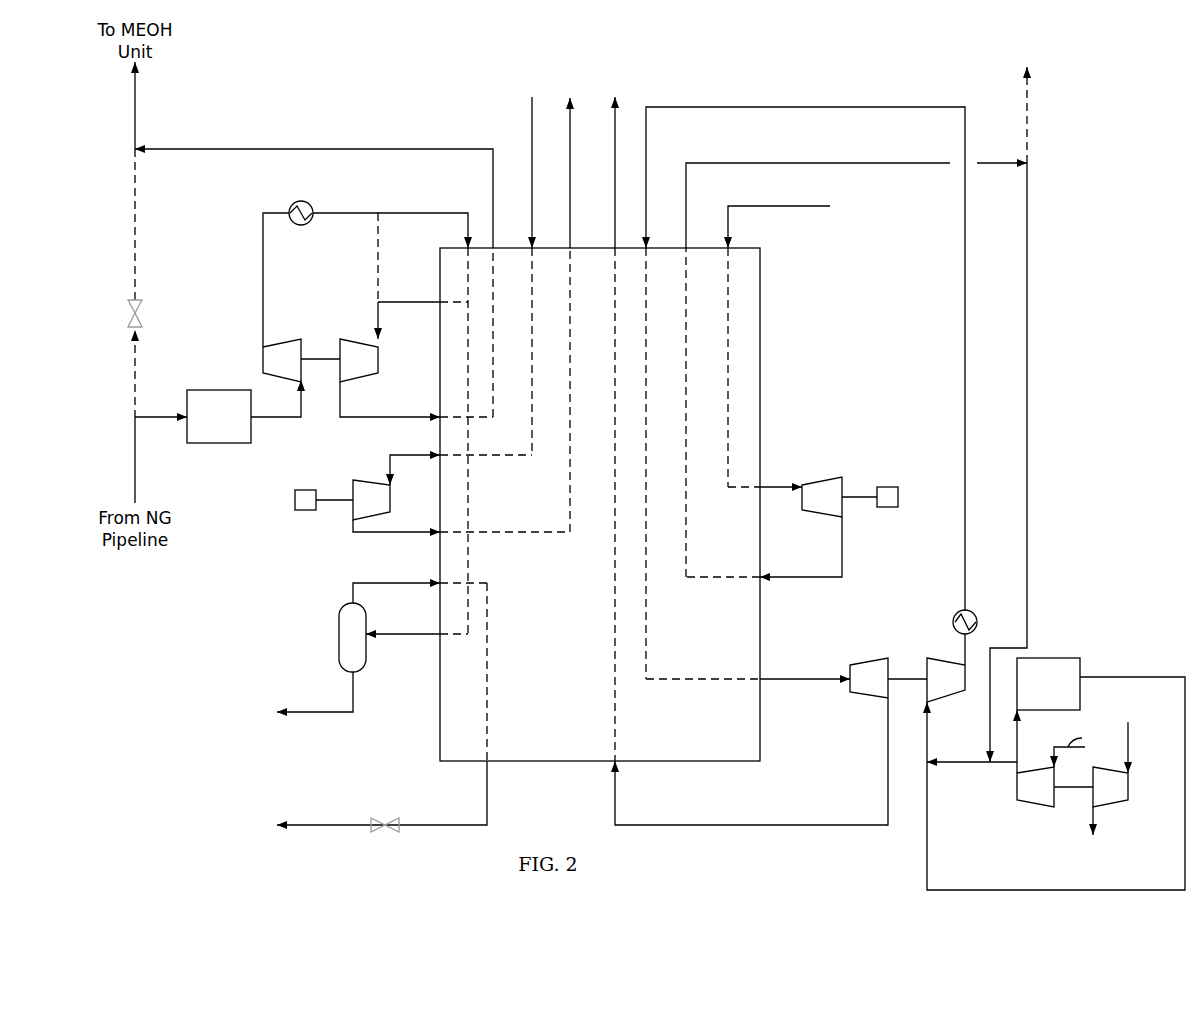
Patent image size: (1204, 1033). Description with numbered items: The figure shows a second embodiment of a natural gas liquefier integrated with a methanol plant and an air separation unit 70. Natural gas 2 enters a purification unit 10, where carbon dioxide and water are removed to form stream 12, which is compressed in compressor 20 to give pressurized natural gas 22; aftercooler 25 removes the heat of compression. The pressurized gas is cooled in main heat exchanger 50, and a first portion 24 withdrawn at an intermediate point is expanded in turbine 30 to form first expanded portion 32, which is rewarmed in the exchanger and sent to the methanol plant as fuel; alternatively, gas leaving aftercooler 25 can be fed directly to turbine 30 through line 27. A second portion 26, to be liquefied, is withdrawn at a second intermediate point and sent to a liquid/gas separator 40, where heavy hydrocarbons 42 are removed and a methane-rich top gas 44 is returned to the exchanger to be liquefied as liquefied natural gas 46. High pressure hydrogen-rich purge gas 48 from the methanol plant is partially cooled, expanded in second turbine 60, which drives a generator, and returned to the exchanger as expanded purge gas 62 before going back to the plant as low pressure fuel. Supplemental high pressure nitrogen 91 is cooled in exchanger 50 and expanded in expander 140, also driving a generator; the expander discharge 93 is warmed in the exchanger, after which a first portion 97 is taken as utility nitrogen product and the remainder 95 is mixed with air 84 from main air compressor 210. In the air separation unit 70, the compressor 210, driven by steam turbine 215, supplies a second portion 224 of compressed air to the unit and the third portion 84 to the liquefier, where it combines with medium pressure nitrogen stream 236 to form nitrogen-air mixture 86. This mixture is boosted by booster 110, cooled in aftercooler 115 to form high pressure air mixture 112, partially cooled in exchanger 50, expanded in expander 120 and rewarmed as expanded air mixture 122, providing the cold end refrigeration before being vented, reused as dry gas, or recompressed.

The natural gas 2 is at (150, 417).
The pretreatment unit 10 is at (219, 416).
The stream 12 is at (291, 418).
The compressor 20 is at (301, 360).
The pressurized natural gas 22 is at (255, 253).
The first portion of the pressurized natural gas 24 is at (433, 300).
The aftercooler 25 is at (309, 203).
The second portion of the pressurized natural gas 26 is at (396, 633).
The line 27 is at (378, 253).
The turbine 30 is at (359, 360).
The first expanded portion 32 is at (398, 416).
The separator 40 is at (352, 637).
The heavy hydrocarbons 42 is at (330, 710).
The top gas 44 is at (410, 582).
The liquefied natural gas 46 is at (415, 824).
The purge gas 48 is at (531, 155).
The heat exchanger 50 is at (760, 360).
The second turbine 60 is at (342, 500).
The expanded purge gas 62 is at (430, 531).
The air separation unit 70 is at (1053, 658).
The air 84 is at (955, 764).
The nitrogen-air mixture 86 is at (927, 715).
The supplemental high pressure nitrogen 91 is at (756, 205).
The turbine exhaust stream 93 is at (822, 576).
The remainder 95 is at (1027, 291).
The first portion 97 is at (1027, 130).
The booster 110 is at (946, 680).
The exhaust stream 112 is at (965, 345).
The aftercooler 115 is at (977, 624).
The expander 120 is at (786, 473).
The expanded air mixture 122 is at (612, 152).
The expander 140 is at (829, 497).
The main air compressor 210 is at (1069, 766).
The steam turbine 215 is at (1123, 781).
The second portion 224 is at (1017, 750).
The nitrogen stream 236 is at (970, 890).